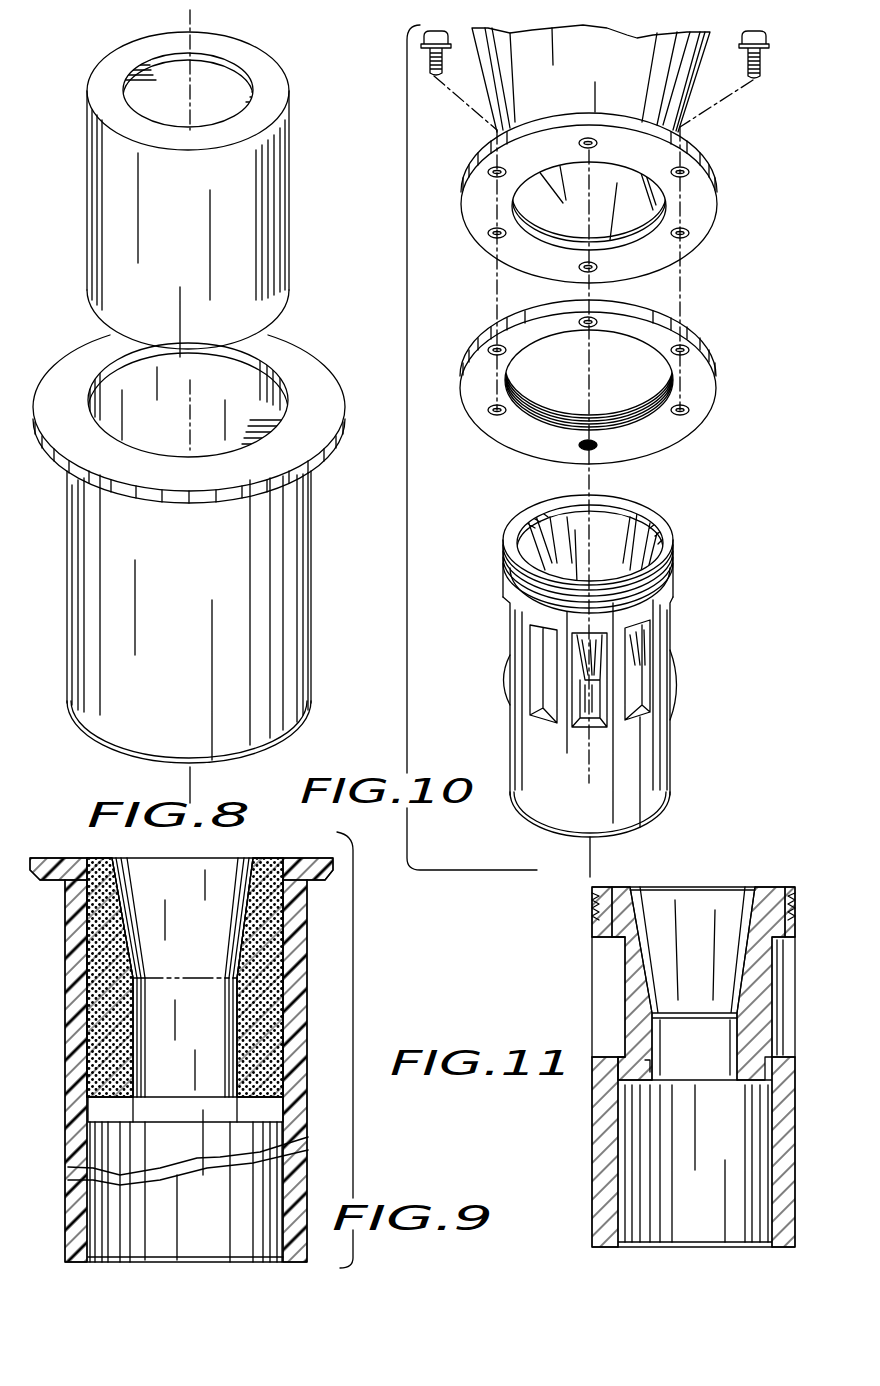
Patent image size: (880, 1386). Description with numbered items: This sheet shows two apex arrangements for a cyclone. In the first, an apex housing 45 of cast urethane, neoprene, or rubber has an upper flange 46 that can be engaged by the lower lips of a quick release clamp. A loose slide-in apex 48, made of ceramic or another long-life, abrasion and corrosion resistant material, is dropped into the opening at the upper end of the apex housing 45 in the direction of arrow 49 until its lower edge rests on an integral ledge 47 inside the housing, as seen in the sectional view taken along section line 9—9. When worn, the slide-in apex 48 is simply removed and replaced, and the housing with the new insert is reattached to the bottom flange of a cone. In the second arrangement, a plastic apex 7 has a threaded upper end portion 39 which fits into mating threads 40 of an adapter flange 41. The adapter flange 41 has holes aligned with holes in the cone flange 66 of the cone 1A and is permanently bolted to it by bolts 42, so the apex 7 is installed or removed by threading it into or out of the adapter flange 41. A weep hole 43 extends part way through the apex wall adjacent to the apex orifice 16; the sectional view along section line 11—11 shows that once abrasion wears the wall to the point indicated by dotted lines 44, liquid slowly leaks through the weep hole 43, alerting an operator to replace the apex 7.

In FIG. 10, the cone 1A is at (687, 80).
In FIG. 10, the apex 7 is at (668, 717).
In FIG. 11, the apex 7 is at (795, 1080).
In FIG. 8, the section line 9— 9 is at (214, 76).
In FIG. 10, the section line 11— 11 is at (606, 521).
In FIG. 11, the apex orifice 16 is at (648, 1065).
In FIG. 10, the threaded upper end portion 39 is at (672, 563).
In FIG. 10, the mating threads 40 is at (617, 410).
In FIG. 10, the adapter flange 41 is at (703, 373).
In FIG. 10, the bolts 42 is at (764, 48).
In FIG. 10, the weep hole 43 is at (550, 650).
In FIG. 11, the weep hole 43 is at (752, 962).
In FIG. 11, the dotted lines 44 is at (740, 983).
In FIG. 8, the apex housing 45 is at (330, 592).
In FIG. 9, the apex housing 45 is at (307, 1017).
In FIG. 8, the upper flange 46 is at (337, 433).
In FIG. 9, the upper flange 46 is at (323, 878).
In FIG. 9, the integral ledge 47 is at (95, 1110).
In FIG. 8, the slide-in apex 48 is at (305, 212).
In FIG. 9, the slide-in apex 48 is at (108, 858).
In FIG. 8, the arrow 49 is at (210, 355).
In FIG. 10, the cone flange 66 is at (707, 200).